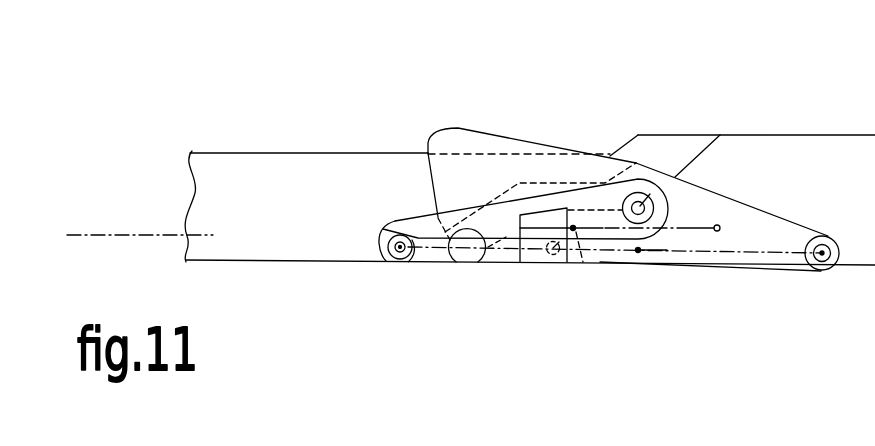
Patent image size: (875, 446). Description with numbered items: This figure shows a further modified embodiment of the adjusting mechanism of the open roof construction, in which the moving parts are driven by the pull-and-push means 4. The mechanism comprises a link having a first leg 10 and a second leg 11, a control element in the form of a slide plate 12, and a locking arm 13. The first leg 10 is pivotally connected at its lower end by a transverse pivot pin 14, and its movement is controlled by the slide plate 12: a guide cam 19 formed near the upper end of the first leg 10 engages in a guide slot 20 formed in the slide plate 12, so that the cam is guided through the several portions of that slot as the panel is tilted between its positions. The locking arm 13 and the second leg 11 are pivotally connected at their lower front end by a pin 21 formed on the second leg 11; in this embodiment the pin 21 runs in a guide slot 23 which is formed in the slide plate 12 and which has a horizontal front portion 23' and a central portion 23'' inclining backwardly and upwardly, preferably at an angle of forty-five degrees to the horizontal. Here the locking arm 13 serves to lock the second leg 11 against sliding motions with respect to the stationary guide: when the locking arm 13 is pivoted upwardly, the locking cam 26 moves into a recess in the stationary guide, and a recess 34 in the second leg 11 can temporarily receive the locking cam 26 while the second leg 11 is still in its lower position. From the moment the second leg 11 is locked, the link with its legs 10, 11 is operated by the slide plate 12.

The pull-and-push means 4 is at (108, 234).
The first leg 10 is at (477, 140).
The second leg 11 is at (427, 227).
The slide plate 12 is at (763, 162).
The locking arm 13 is at (430, 262).
The transverse pivot pin 14 is at (822, 253).
The guide cam 19 is at (450, 262).
The guide slot 20 is at (677, 158).
The pin 21 is at (386, 261).
The guide slot 23 is at (643, 294).
The horizontal front portion 23' is at (499, 300).
The central portion 23'' is at (596, 297).
The locking cam 26 is at (536, 262).
The recess 34 is at (550, 221).